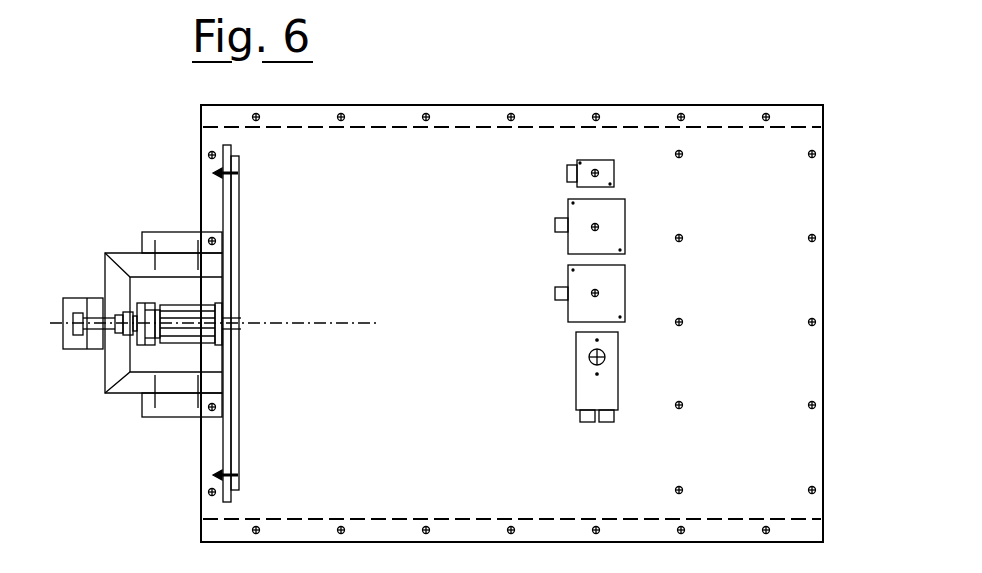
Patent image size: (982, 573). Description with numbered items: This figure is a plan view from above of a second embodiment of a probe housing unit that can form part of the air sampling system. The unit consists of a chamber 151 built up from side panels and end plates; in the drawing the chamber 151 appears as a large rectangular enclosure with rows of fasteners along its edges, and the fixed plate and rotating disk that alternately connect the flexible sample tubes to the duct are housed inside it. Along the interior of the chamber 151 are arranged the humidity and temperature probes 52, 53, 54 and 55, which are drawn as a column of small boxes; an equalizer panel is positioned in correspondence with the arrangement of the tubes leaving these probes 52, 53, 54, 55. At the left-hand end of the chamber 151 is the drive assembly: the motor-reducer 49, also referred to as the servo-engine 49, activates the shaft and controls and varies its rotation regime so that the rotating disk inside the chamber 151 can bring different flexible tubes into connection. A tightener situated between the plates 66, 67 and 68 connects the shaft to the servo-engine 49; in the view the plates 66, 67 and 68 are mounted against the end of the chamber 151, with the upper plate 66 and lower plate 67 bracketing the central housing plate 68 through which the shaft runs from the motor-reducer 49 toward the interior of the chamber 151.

The chamber 151 is at (795, 97).
The motor-reducer 49 is at (73, 309).
The humidity and temperature probe 52 is at (579, 241).
The humidity and temperature probe 53 is at (579, 308).
The humidity and temperature probe 54 is at (591, 393).
The humidity and temperature probe 55 is at (581, 170).
The plate 66 is at (170, 240).
The plate 67 is at (173, 403).
The plate 68 is at (135, 262).